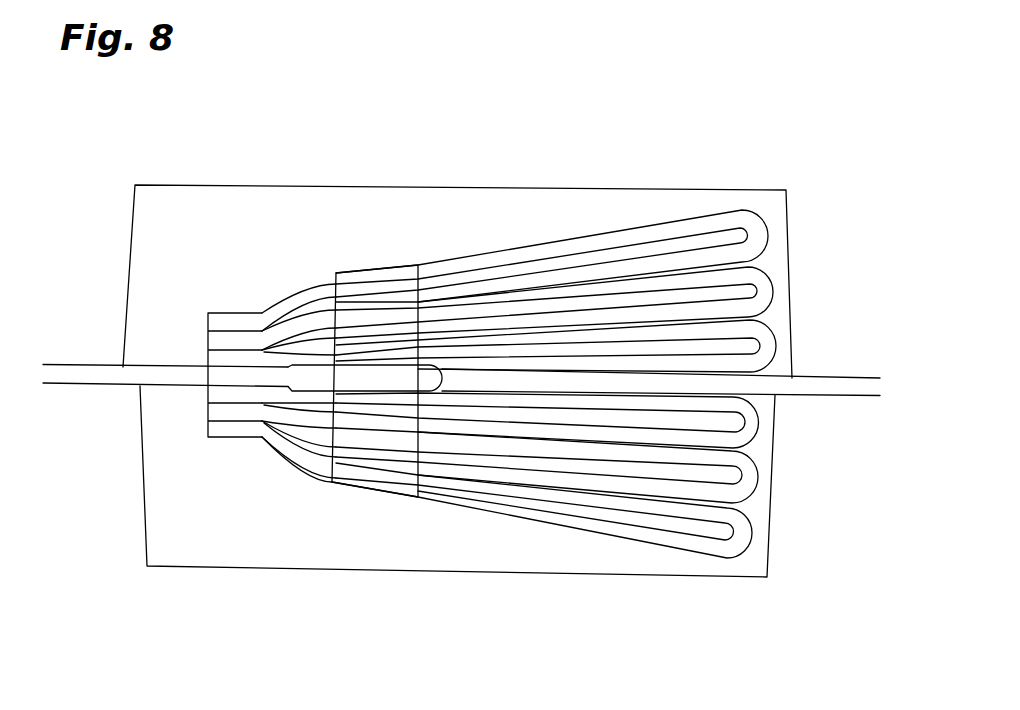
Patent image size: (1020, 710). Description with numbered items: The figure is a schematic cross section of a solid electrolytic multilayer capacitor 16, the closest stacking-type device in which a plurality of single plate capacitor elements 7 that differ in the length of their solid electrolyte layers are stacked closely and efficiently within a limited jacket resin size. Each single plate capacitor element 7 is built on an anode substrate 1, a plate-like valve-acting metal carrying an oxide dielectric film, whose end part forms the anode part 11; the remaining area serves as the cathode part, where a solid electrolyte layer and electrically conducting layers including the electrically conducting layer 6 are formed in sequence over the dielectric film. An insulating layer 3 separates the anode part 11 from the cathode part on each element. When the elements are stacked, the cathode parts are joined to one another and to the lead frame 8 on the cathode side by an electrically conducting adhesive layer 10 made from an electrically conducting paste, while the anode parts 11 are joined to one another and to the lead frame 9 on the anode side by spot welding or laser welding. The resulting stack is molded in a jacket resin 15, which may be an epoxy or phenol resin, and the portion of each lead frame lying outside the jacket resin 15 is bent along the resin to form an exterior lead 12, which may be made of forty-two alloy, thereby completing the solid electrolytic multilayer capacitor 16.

The anode substrate 1 is at (222, 323).
The insulating layer 3 is at (357, 278).
The electrically conducting layer 6 is at (662, 233).
The single plate capacitor element 7 is at (757, 230).
The lead frame in the cathode side 8 is at (512, 383).
The lead frame in the anode side 9 is at (260, 378).
The electrically conducting adhesive layer 10 is at (592, 280).
The anode part 11 is at (286, 308).
The exterior lead 12 is at (62, 373).
The jacket resin 15 is at (210, 530).
The solid electrolytic multilayer capacitor 16 is at (183, 182).